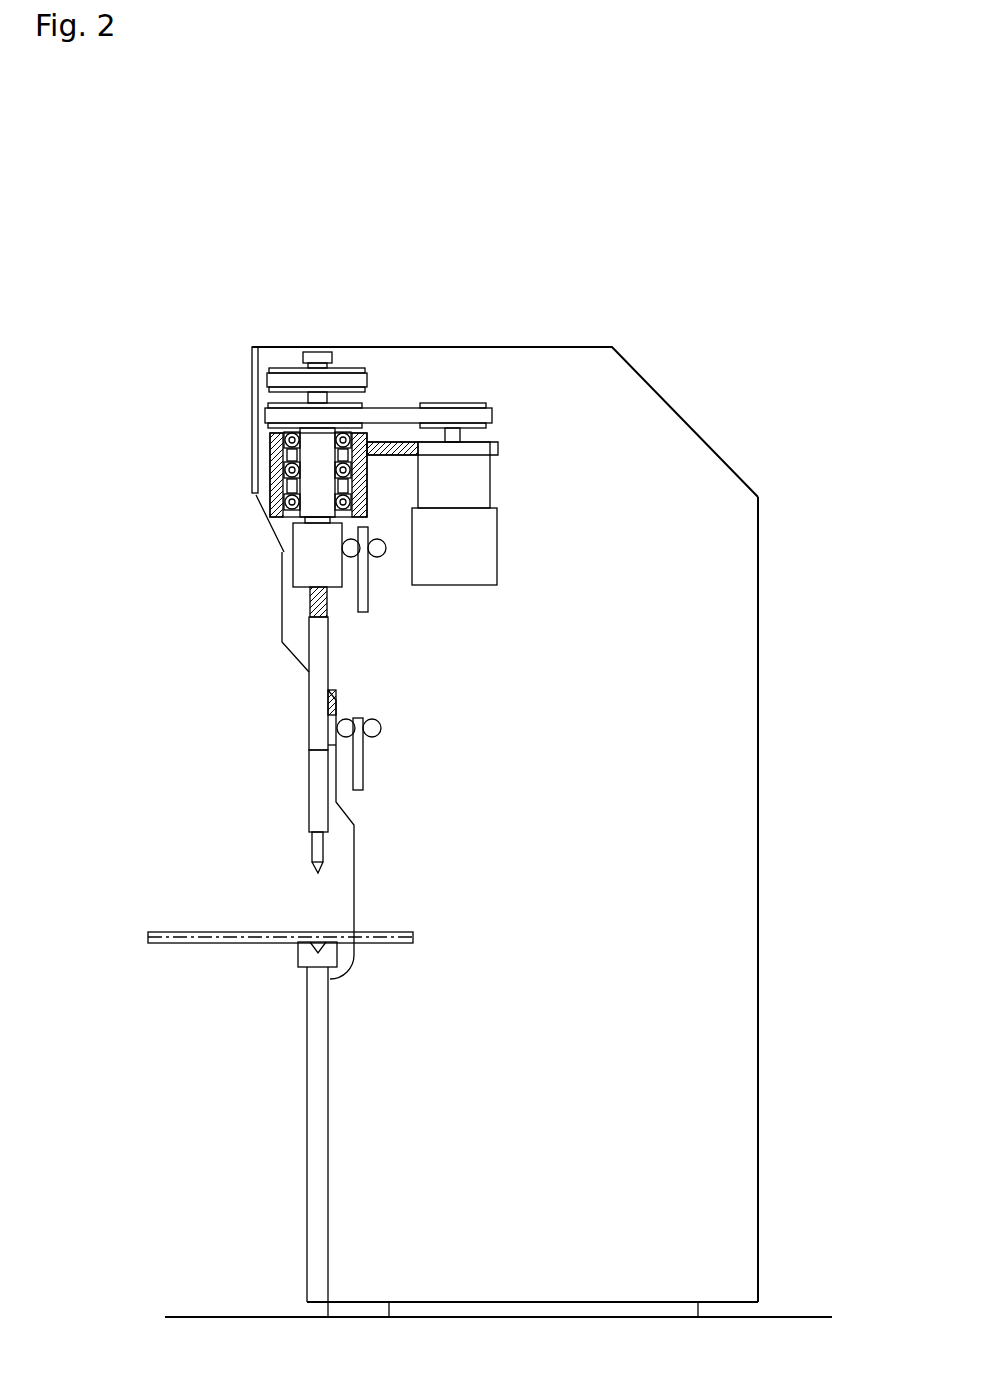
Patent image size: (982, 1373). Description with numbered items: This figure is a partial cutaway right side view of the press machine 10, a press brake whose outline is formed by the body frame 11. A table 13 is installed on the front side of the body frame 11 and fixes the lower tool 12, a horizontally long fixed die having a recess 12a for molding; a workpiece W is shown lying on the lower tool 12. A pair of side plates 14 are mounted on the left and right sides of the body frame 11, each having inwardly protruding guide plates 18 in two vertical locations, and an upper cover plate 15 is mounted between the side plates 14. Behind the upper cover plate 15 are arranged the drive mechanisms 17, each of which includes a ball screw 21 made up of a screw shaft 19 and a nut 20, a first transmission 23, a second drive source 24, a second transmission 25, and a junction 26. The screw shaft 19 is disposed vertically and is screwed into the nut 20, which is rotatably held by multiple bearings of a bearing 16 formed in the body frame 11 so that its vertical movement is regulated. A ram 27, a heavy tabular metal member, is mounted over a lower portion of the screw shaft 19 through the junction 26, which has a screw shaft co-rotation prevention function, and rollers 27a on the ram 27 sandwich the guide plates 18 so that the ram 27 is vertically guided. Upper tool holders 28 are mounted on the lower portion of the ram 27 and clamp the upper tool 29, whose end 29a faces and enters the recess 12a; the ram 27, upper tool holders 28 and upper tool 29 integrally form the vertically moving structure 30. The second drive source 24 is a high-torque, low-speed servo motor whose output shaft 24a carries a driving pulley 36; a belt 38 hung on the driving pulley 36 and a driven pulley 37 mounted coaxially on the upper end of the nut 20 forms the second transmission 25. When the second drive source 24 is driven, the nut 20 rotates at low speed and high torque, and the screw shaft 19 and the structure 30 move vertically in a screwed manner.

The press machine 10 is at (730, 365).
The body frame 11 is at (760, 808).
The lower tool 12 is at (297, 962).
The recess 12a is at (314, 935).
The table 13 is at (318, 1160).
The side plate 14 is at (741, 655).
The upper cover plate 15 is at (252, 373).
The bearing 16 is at (276, 497).
The drive mechanism 17 is at (462, 386).
The guide plate 18 is at (363, 613).
The screw shaft 19 is at (315, 355).
The nut 20 is at (316, 491).
The ball screw 21 is at (245, 392).
The first transmission 23 is at (368, 378).
The second drive source 24 is at (497, 543).
The output shaft 24a is at (455, 444).
The second transmission 25 is at (416, 398).
The junction 26 is at (280, 559).
The ram 27 is at (309, 718).
The roller 27a is at (380, 558).
The upper tool holder 28 is at (313, 795).
The upper tool 29 is at (317, 848).
The end 29a is at (318, 874).
The vertically moving structure 30 is at (232, 703).
The driving pulley 36 is at (490, 430).
The driven pulley 37 is at (268, 410).
The belt 38 is at (391, 416).
The workpiece W is at (163, 930).